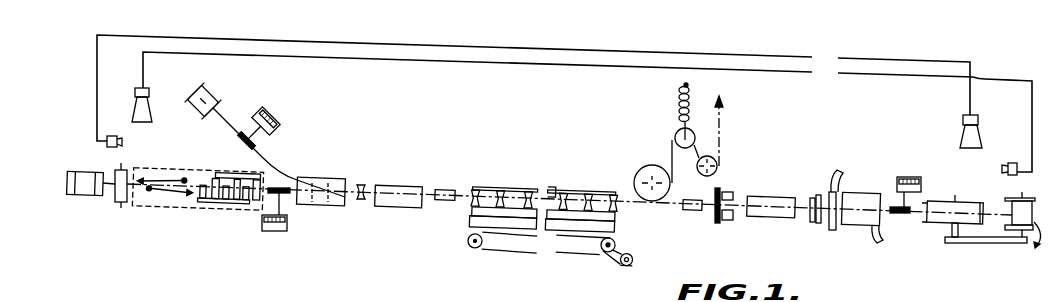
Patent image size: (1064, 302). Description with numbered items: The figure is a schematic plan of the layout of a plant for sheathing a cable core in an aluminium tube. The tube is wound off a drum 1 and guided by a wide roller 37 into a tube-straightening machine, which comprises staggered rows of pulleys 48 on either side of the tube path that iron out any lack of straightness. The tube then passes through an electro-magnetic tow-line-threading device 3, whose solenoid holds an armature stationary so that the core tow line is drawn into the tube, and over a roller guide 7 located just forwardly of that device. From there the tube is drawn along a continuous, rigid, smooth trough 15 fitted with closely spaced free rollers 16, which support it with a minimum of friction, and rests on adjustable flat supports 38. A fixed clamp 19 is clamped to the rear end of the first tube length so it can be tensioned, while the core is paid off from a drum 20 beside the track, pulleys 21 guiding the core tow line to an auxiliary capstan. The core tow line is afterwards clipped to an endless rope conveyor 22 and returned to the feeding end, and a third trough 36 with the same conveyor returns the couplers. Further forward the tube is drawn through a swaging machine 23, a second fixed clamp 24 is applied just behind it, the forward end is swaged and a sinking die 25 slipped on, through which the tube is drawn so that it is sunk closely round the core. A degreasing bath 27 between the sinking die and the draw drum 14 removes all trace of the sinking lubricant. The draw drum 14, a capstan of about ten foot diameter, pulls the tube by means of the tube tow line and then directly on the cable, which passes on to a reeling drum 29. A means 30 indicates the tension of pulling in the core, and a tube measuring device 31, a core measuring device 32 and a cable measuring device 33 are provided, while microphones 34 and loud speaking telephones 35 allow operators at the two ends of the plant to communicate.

The drum 1 is at (87, 170).
The wide roller 37 is at (113, 203).
The pulleys 48 is at (161, 181).
The drum 20 is at (221, 100).
The core measuring device 32 is at (273, 109).
The tube measuring device 31 is at (271, 231).
The electro-magnetic tow-line-threading device 3 is at (326, 178).
The roller guide 7 is at (366, 186).
The adjustable flat supports 38 is at (407, 208).
The fixed clamp 19 is at (443, 190).
The free rollers 16 is at (499, 189).
The trough 15 is at (509, 188).
The endless rope conveyor 22 is at (560, 236).
The third trough 36 is at (616, 226).
The pulleys 21 is at (636, 182).
The tension indicating means 30 is at (677, 107).
The fixed clamp 24 is at (692, 212).
The swaging machine 23 is at (719, 224).
The sinking die 25 is at (817, 225).
The degreasing bath 27 is at (860, 193).
The cable measuring device 33 is at (906, 177).
The draw drum 14 is at (969, 202).
The reeling drum 29 is at (1023, 235).
The loud speaking telephones 35 is at (132, 108).
The microphones 34 is at (112, 136).